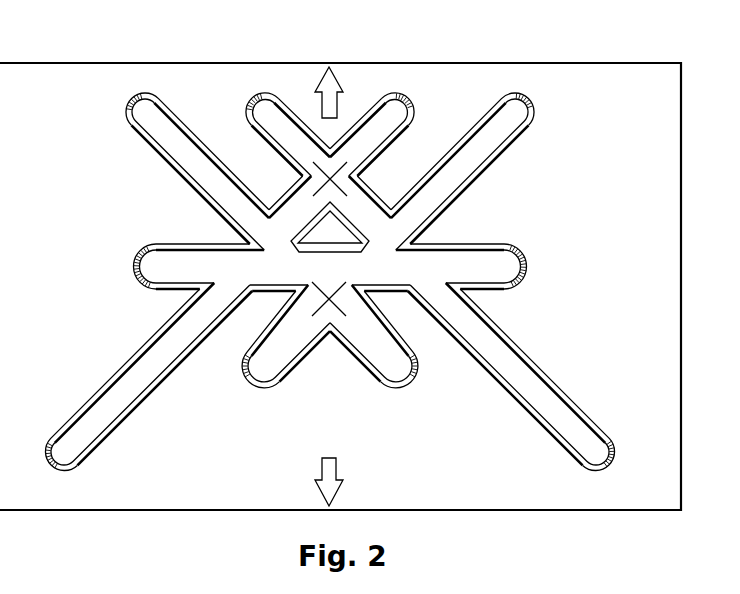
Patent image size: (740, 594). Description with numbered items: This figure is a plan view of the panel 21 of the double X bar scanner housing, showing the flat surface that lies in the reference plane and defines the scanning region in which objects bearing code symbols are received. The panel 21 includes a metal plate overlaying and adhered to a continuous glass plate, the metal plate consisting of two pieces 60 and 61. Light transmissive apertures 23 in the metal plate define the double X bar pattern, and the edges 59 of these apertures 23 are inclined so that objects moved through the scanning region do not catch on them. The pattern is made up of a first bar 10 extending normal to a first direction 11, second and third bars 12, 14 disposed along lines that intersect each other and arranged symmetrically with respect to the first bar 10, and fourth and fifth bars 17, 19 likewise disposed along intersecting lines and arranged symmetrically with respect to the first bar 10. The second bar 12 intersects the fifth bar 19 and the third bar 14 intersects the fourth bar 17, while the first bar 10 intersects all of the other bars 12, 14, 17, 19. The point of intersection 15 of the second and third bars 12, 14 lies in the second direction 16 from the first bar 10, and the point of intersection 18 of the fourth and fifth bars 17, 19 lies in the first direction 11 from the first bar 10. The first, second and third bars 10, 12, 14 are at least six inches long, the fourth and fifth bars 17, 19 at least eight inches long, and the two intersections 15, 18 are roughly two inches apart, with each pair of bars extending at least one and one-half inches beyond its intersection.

The first bar 10 is at (177, 272).
The first direction 11 is at (321, 73).
The second bar 12 is at (172, 148).
The third bar 14 is at (485, 140).
The point of intersection 15 is at (350, 299).
The second direction 16 is at (337, 465).
The fourth bar 17 is at (275, 130).
The point of intersection 18 is at (332, 180).
The fifth bar 19 is at (388, 128).
The panel 21 is at (68, 62).
The apertures 23 is at (485, 248).
The edges 59 is at (198, 195).
The metal plate piece 60 is at (598, 76).
The metal plate piece 61 is at (333, 237).